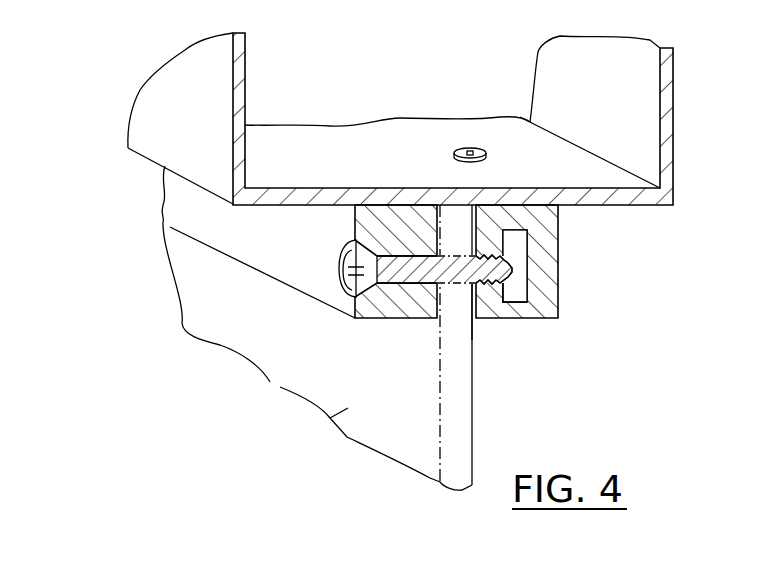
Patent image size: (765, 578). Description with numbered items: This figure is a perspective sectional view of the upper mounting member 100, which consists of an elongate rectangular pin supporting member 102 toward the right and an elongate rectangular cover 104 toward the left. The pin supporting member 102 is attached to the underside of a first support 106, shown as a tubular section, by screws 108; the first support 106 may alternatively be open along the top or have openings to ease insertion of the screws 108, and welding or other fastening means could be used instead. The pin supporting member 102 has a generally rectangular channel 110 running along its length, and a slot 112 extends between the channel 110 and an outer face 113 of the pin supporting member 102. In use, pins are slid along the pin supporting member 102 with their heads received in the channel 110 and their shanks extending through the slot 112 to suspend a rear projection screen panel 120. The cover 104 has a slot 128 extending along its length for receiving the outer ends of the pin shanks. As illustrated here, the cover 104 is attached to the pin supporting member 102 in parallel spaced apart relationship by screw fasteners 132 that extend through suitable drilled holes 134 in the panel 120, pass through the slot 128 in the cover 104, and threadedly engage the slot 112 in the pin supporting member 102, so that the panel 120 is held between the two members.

The upper mounting member 100 is at (598, 284).
The pin supporting member 102 is at (557, 242).
The cover 104 is at (195, 198).
The first support 106 is at (170, 88).
The screws 108 is at (471, 148).
The channel 110 is at (521, 214).
The slot 112 is at (516, 303).
The outer face 113 is at (466, 289).
The rear projection screen panel 120 is at (327, 417).
The slot 128 is at (422, 297).
The screw fasteners 132 is at (392, 268).
The drilled holes 134 is at (453, 213).